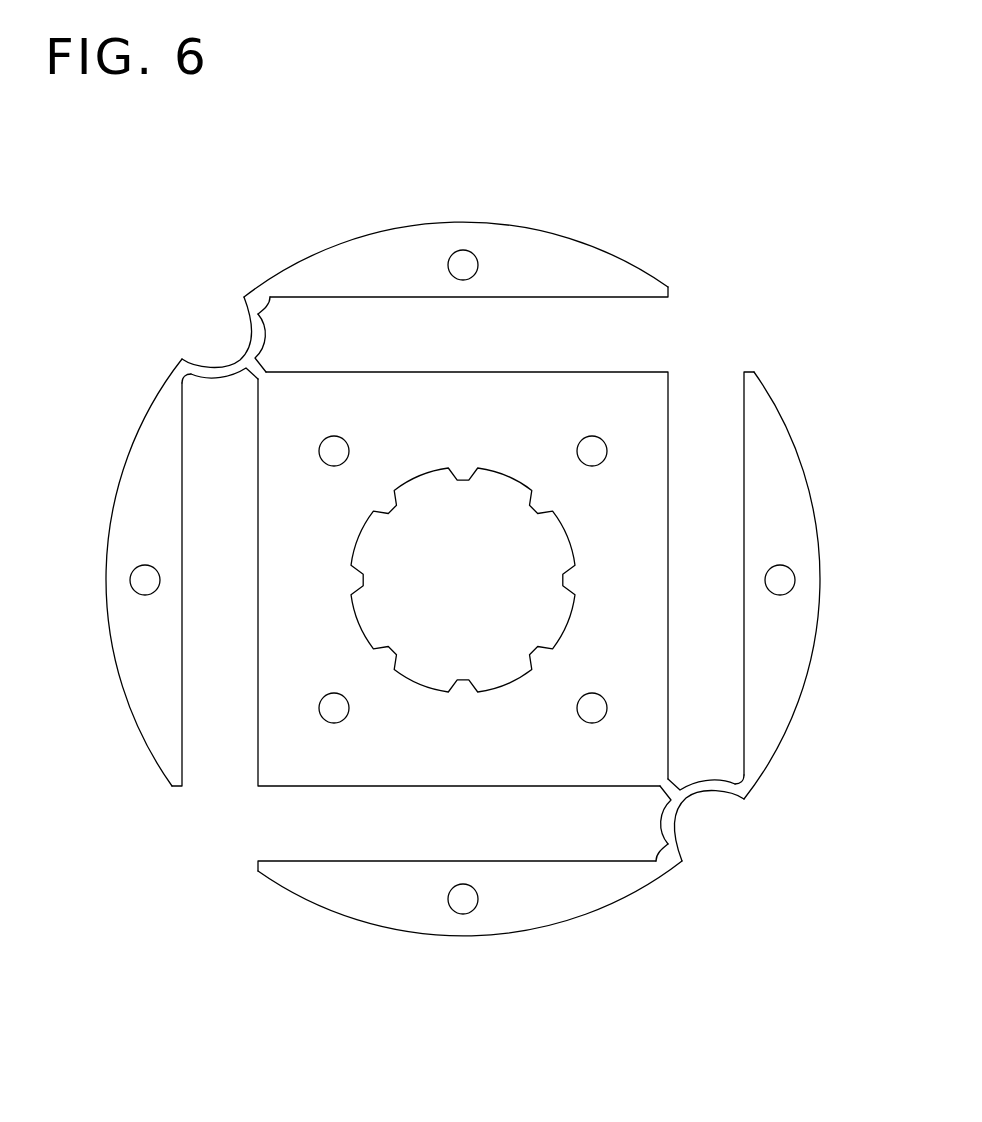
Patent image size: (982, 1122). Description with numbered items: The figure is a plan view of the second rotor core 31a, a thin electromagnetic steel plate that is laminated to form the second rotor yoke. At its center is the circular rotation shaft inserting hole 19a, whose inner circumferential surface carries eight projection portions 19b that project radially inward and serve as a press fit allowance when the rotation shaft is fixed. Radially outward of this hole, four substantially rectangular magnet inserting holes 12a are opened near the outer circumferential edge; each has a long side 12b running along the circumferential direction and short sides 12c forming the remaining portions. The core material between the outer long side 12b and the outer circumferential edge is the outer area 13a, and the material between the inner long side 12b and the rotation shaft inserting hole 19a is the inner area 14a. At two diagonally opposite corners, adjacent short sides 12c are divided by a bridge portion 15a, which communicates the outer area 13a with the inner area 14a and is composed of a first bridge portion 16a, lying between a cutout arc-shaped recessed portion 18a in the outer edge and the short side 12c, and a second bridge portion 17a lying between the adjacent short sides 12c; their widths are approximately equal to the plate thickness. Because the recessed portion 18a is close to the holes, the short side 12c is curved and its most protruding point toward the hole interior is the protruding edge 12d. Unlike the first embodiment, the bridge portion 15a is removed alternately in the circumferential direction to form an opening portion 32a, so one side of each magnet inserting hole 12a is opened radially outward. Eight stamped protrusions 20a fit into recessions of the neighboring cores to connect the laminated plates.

The second rotor core 31a is at (214, 214).
The magnet inserting hole 12a is at (484, 350).
The long side 12b is at (533, 297).
The short side 12c is at (266, 297).
The protruding edge 12d is at (277, 331).
The outer area 13a is at (371, 240).
The inner area 14a is at (340, 778).
The bridge portion 15a is at (476, 544).
The first bridge portion 16a is at (247, 313).
The second bridge portion 17a is at (252, 370).
The recessed portion 18a is at (194, 341).
The rotation shaft inserting hole 19a is at (463, 580).
The projection portion 19b is at (534, 509).
The protrusion 20a is at (463, 251).
The opening portion 32a is at (723, 386).